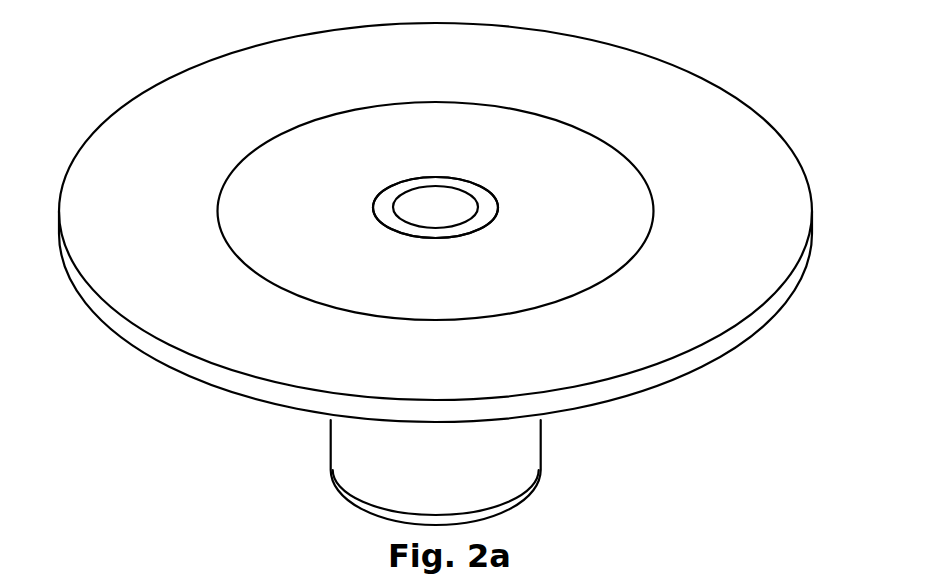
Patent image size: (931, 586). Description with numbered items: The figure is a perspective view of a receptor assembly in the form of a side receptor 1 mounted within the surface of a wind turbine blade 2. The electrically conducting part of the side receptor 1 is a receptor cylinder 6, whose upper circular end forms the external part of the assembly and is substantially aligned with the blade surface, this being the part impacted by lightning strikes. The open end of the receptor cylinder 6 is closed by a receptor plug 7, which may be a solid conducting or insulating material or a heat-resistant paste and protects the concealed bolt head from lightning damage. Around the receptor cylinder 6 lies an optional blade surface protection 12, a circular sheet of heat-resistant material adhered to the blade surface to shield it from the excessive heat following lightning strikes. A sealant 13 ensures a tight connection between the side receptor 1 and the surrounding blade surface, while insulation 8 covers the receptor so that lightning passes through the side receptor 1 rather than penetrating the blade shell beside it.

The side receptor 1 is at (378, 195).
The wind turbine blade 2 is at (138, 213).
The receptor cylinder 6 is at (462, 186).
The receptor plug 7 is at (423, 216).
The insulation 8 is at (482, 460).
The blade surface protection 12 is at (297, 263).
The sealant 13 is at (495, 198).